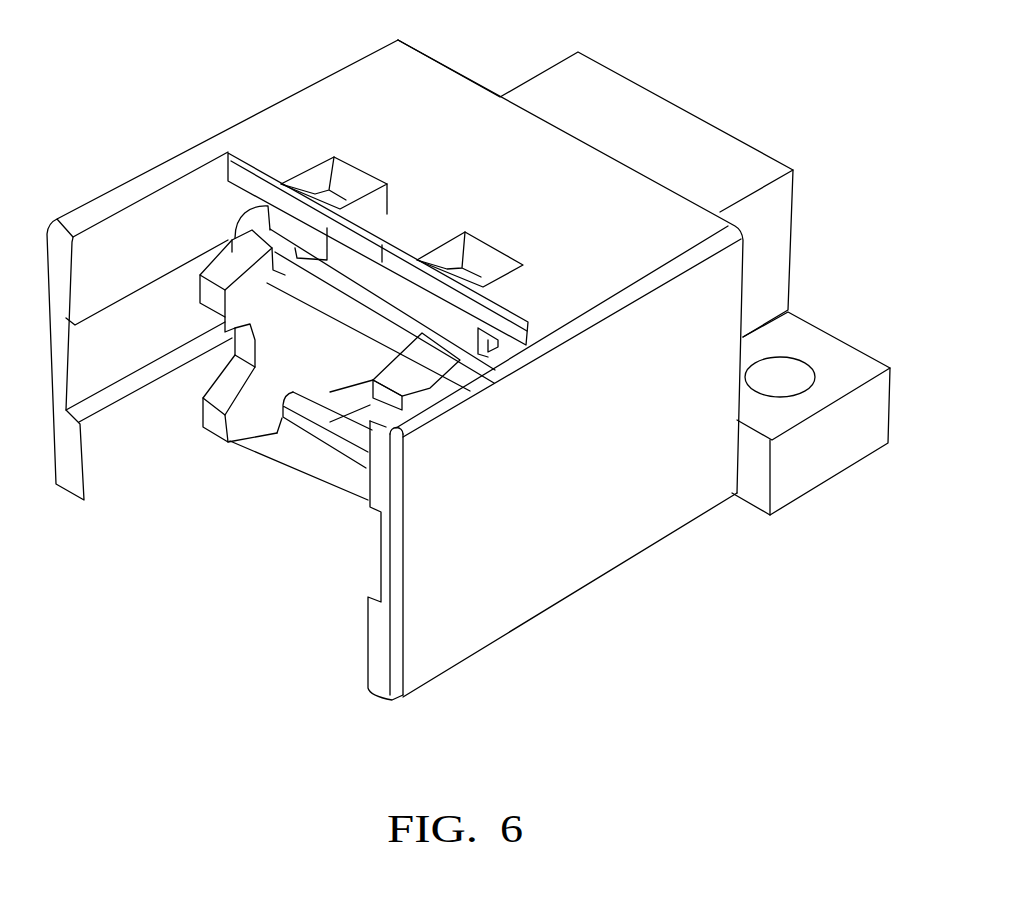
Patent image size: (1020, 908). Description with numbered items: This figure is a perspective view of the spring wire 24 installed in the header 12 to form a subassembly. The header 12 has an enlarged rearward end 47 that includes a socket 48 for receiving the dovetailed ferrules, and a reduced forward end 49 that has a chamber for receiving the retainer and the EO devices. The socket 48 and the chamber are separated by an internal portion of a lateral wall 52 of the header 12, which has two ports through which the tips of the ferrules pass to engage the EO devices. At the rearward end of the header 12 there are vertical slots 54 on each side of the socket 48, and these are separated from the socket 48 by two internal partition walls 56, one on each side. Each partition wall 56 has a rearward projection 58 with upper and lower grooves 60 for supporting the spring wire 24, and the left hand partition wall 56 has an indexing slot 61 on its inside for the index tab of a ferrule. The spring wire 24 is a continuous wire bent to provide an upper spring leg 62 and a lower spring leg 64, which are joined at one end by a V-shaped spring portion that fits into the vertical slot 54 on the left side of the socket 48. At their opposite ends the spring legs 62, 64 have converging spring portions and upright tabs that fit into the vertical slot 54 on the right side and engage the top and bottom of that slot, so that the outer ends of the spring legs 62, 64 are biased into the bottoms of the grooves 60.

The header 12 is at (664, 545).
The spring wire 24 is at (323, 447).
The enlarged rearward end 47 is at (472, 618).
The socket 48 is at (396, 347).
The reduced forward end 49 is at (776, 198).
The lateral wall 52 is at (744, 292).
The vertical slots 54 is at (243, 199).
The internal partition walls 56 is at (342, 350).
The rearward projection 58 is at (445, 365).
The upper and lower grooves 60 is at (280, 273).
The indexing slot 61 is at (283, 337).
The upper spring leg 62 is at (325, 362).
The lower spring leg 64 is at (357, 453).